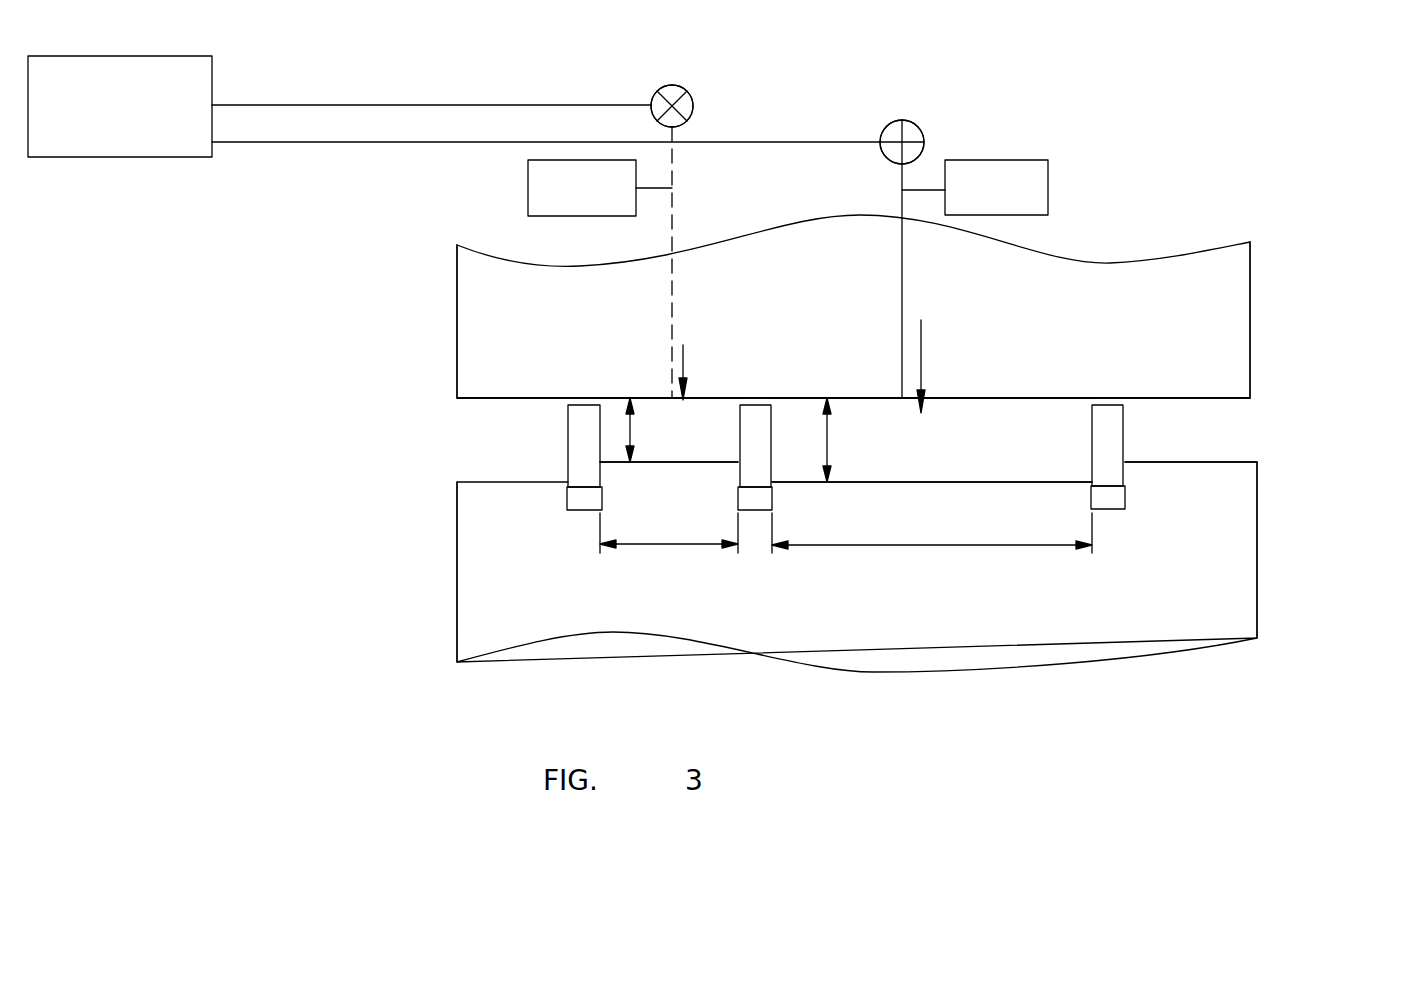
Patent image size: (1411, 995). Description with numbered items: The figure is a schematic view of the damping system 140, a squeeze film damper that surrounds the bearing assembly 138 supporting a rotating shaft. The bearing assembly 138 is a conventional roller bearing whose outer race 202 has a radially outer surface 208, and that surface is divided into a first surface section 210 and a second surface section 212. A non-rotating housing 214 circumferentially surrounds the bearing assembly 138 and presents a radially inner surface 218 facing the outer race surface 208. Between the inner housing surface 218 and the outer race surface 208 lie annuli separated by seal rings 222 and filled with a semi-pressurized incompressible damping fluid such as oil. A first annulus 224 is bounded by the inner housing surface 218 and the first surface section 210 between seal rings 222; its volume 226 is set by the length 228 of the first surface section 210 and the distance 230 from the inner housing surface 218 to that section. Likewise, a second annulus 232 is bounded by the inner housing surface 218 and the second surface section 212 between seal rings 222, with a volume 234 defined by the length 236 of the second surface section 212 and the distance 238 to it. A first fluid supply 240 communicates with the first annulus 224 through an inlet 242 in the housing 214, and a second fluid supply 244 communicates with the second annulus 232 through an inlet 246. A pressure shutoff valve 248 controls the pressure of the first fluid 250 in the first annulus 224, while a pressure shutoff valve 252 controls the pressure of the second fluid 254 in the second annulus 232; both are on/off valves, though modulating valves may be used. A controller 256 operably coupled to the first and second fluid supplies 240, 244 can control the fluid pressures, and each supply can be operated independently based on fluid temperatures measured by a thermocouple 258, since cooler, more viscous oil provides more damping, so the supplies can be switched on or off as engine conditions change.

The bearing assembly 138 is at (1168, 665).
The damping system 140 is at (1132, 90).
The outer race 202 is at (1257, 550).
The radially outer surface 208 is at (1237, 462).
The first surface section 210 is at (905, 470).
The second surface section 212 is at (648, 463).
The housing 214 is at (1250, 268).
The radially inner surface 218 is at (1203, 400).
The seal rings 222 is at (568, 437).
The first annulus 224 is at (1055, 390).
The volume 226 is at (1010, 457).
The length 228 is at (925, 548).
The distance 230 is at (827, 440).
The second annulus 232 is at (736, 390).
The volume 234 is at (717, 447).
The length 236 is at (660, 548).
The distance 238 is at (630, 430).
The first fluid supply 240 is at (918, 110).
The inlet 242 is at (903, 308).
The second fluid supply 244 is at (690, 74).
The inlet 246 is at (672, 275).
The pressure shutoff valve 248 is at (924, 138).
The first fluid 250 is at (921, 362).
The pressure shutoff valve 252 is at (693, 106).
The second fluid 254 is at (683, 358).
The controller 256 is at (148, 115).
The thermocouple 258 is at (611, 202).